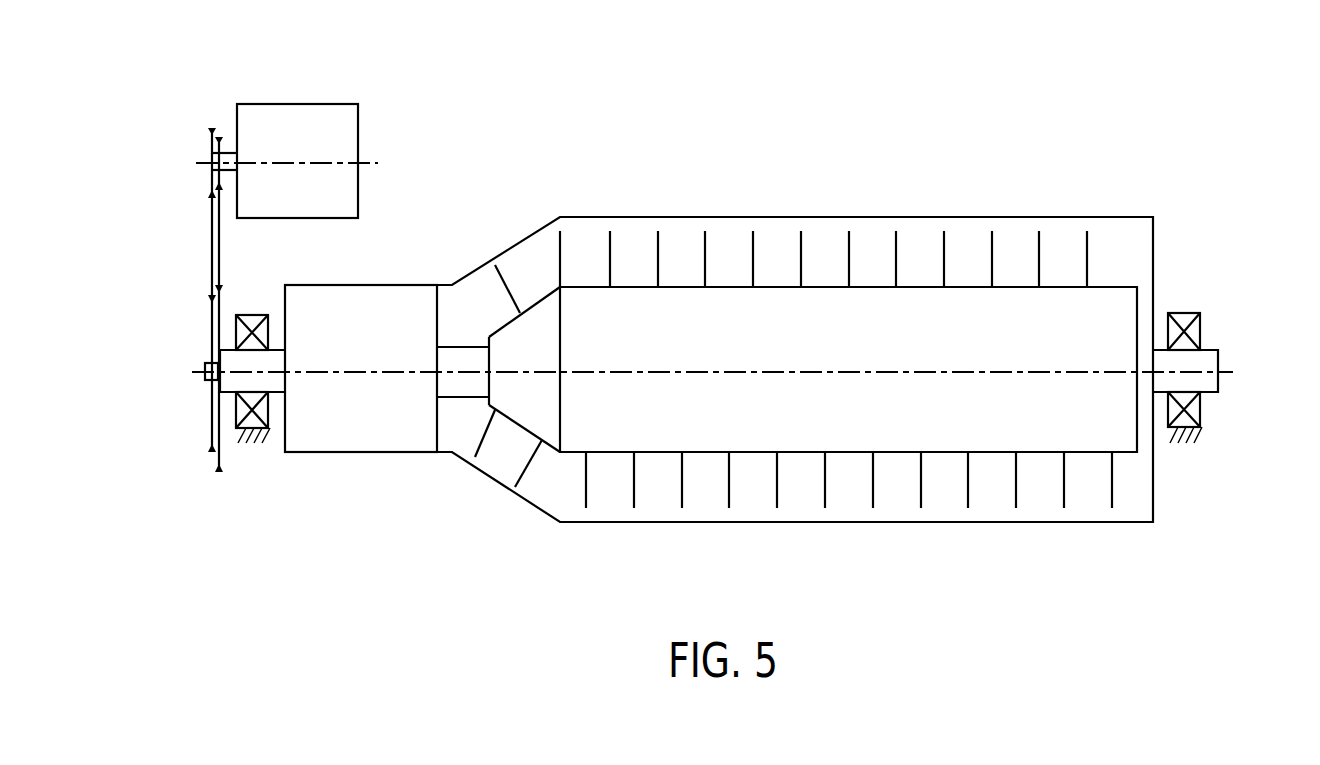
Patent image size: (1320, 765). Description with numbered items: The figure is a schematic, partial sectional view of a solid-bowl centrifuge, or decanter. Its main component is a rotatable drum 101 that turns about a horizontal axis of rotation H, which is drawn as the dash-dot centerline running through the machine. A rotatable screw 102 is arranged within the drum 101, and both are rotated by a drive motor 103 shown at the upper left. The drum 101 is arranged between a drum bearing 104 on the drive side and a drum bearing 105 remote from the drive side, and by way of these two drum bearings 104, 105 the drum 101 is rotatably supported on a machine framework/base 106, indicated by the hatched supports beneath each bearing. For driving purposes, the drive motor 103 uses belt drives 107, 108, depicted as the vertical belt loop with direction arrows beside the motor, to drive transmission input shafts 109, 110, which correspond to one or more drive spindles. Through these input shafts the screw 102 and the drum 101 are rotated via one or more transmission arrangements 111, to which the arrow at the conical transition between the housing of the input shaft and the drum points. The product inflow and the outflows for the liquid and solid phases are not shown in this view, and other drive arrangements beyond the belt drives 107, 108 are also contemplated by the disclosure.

The rotatable drum 101 is at (1068, 217).
The rotatable screw 102 is at (913, 283).
The drive motor 103 is at (358, 121).
The drum bearing 104 is at (252, 432).
The drum bearing 105 is at (1203, 326).
The machine framework/base 106 is at (268, 442).
The belt drive 107 is at (219, 237).
The belt drive 108 is at (212, 210).
The transmission input shaft 109 is at (277, 295).
The transmission input shaft 110 is at (205, 373).
The transmission arrangement 111 is at (398, 281).
The horizontal axis of rotation H is at (1095, 368).